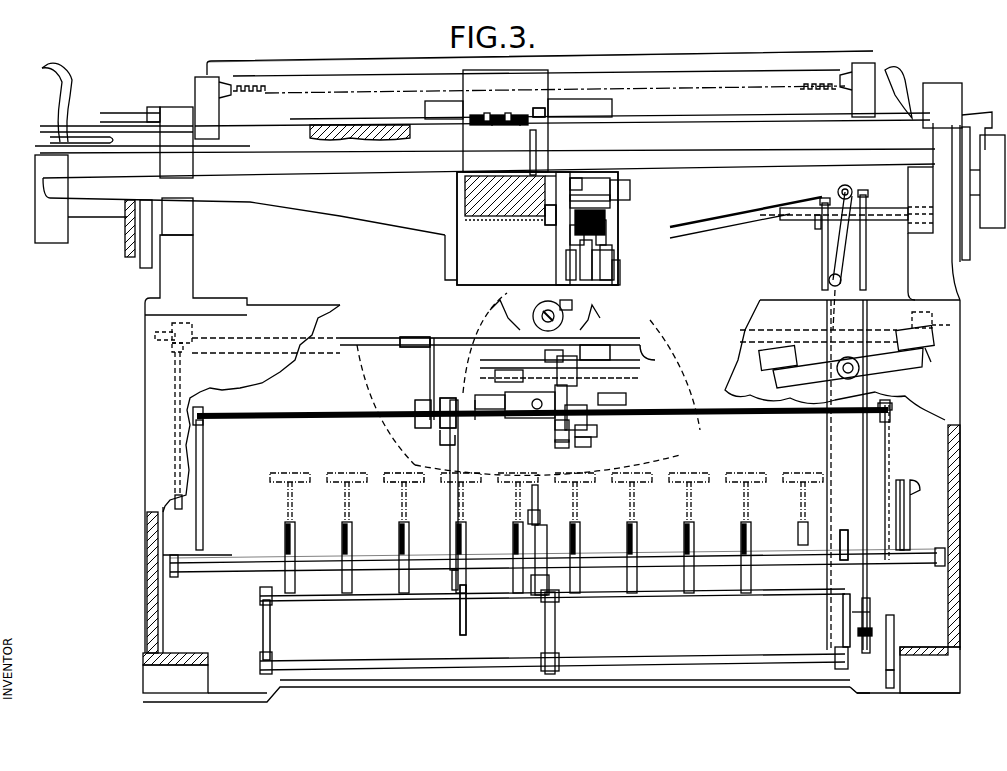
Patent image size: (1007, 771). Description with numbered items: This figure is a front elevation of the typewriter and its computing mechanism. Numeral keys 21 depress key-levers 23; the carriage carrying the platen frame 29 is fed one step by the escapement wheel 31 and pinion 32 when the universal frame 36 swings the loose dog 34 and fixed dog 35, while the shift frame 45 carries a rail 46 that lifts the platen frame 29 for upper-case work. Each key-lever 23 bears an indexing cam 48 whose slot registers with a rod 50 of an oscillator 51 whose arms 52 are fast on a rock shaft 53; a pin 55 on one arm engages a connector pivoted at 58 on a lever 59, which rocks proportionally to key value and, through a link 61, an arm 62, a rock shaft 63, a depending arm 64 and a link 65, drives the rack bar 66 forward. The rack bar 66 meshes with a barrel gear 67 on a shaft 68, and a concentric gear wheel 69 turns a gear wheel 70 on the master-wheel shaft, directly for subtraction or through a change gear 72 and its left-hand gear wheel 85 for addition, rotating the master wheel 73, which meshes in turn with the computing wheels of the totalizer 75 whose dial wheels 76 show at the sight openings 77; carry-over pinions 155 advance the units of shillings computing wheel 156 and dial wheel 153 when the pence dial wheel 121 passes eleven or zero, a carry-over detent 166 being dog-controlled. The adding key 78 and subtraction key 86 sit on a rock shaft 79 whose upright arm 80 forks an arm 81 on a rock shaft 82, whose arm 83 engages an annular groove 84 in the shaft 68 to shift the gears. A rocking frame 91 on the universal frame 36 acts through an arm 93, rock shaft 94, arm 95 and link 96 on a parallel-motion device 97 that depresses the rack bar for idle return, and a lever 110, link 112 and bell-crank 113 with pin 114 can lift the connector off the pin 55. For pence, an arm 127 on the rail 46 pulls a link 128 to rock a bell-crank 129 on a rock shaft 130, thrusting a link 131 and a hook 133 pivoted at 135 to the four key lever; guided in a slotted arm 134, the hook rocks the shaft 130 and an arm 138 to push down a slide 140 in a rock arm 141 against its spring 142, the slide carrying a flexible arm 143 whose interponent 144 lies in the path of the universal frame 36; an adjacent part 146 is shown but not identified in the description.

The platen frame 29 is at (768, 58).
The totalizer 75 is at (466, 78).
The sight opening 77 is at (541, 108).
The units of shillings computing wheel 156 is at (521, 113).
The pence dial wheel 121 is at (546, 114).
The dial wheel 76 is at (491, 125).
The units of shillings dial wheel 153 is at (527, 126).
The master wheel 73 is at (550, 175).
The left-hand gear wheel 85 is at (576, 178).
The gear wheel 70 is at (592, 172).
The carry-over pinion 155 is at (500, 176).
The change gear 72 is at (610, 198).
The carry-over detent 166 is at (481, 222).
The barrel gear 67 is at (570, 238).
The gear wheel 69 is at (566, 256).
The rack bar 66 is at (606, 232).
The depending arm 64 is at (614, 262).
The link 65 is at (616, 272).
The rock shaft 63 is at (756, 212).
The parallel-motion device 97 is at (822, 205).
The arm 83 is at (838, 191).
The rock shaft 82 is at (850, 190).
The arm 62 is at (866, 198).
The shaft 68 is at (752, 222).
The annular groove 84 is at (846, 232).
The arm 81 is at (830, 260).
The upright arm 80 is at (842, 279).
The horizontal rail 46 is at (365, 340).
The rearwardly-extending arm 127 is at (428, 336).
The pinion 32 is at (564, 310).
The escapement wheel 31 is at (590, 318).
The fixed dog 35 is at (565, 356).
The universal frame 36 is at (648, 364).
The rock shaft 79 is at (848, 358).
The adding key 78 is at (762, 364).
The subtraction key 86 is at (937, 365).
The link 128 is at (428, 362).
The hook 133 is at (447, 398).
The loose dog 34 is at (528, 392).
The interponent 144 is at (586, 360).
The shift frame 45 is at (184, 380).
The slotted arm 134 is at (485, 399).
The spring 142 is at (532, 403).
The rock shaft 130 is at (275, 420).
The flexible arm 143 is at (535, 418).
The horizontally-disposed arm 138 is at (556, 432).
The block 146 is at (582, 434).
The numeral keys 21 is at (392, 472).
The bell-crank lever 129 is at (425, 430).
The rearwardly-extending link 131 is at (446, 446).
The slide 140 is at (562, 449).
The rock arm 141 is at (584, 448).
The link 61 is at (862, 440).
The rocking frame 91 is at (534, 500).
The key-levers 23 is at (399, 530).
The link 96 is at (831, 497).
The lever 110 is at (898, 514).
The indexing cam 48 is at (456, 555).
The arm 93 is at (548, 540).
The rock shaft 94 is at (597, 562).
The arm 95 is at (848, 545).
The oscillator 51 is at (260, 592).
The arms 52 is at (270, 619).
The pivot 135 is at (458, 605).
The rod 50 is at (605, 592).
The pin 114 is at (876, 620).
The pin 55 is at (852, 612).
The bell-crank lever 113 is at (894, 634).
The pivot 58 is at (858, 638).
The rock shaft 53 is at (696, 658).
The link 112 is at (896, 679).
The lever 59 is at (852, 690).